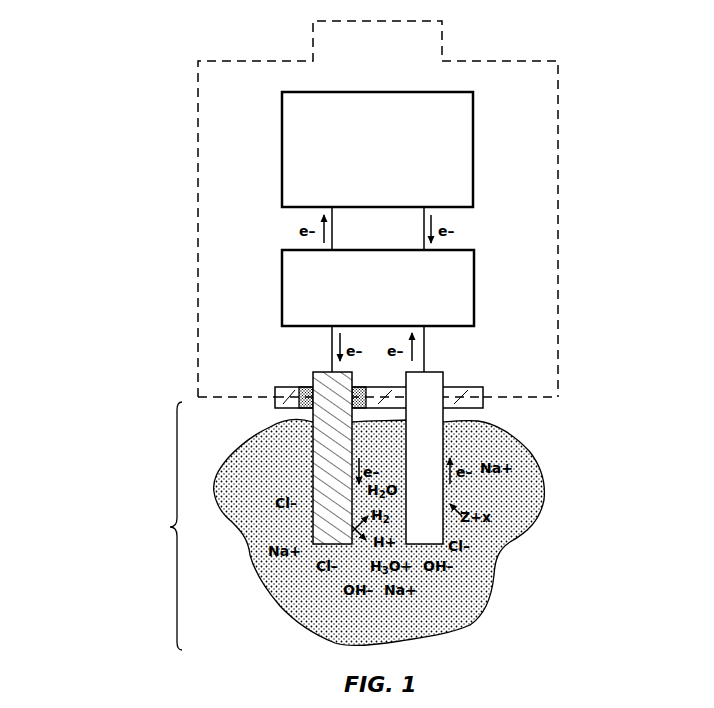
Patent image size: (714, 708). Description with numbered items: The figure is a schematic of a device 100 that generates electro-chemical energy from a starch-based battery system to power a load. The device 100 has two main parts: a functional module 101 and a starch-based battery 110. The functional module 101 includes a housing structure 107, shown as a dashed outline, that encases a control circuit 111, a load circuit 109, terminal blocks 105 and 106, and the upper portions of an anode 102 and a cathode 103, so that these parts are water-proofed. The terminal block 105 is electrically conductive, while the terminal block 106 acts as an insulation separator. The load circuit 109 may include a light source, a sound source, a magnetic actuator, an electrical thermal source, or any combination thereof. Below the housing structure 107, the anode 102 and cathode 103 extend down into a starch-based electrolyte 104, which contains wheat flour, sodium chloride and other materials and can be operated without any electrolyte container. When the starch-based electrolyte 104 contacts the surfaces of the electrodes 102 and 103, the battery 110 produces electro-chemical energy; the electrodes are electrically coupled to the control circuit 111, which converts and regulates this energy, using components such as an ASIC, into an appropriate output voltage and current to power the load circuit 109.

The device 100 is at (106, 112).
The functional module 101 is at (574, 134).
The anode 102 is at (428, 455).
The cathode 103 is at (322, 455).
The starch-based electrolyte 104 is at (290, 590).
The terminal block 105 is at (463, 388).
The terminal block 106 is at (307, 388).
The housing structure 107 is at (558, 217).
The load circuit 109 is at (473, 115).
The starch-based battery 110 is at (161, 526).
The control circuit 111 is at (474, 290).